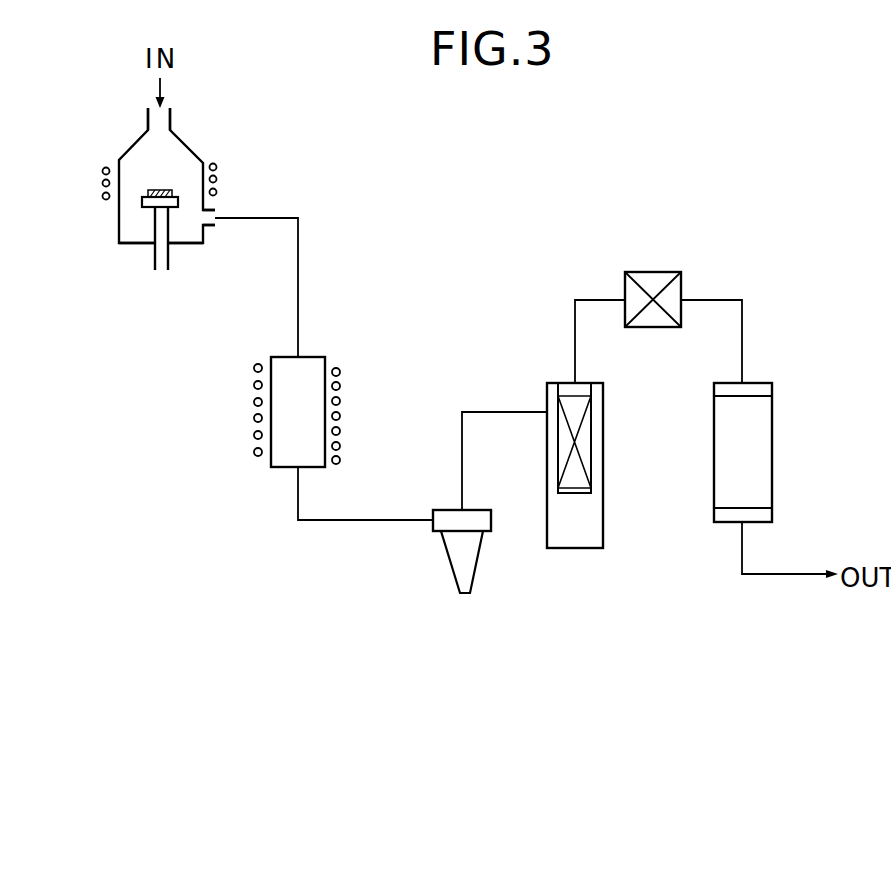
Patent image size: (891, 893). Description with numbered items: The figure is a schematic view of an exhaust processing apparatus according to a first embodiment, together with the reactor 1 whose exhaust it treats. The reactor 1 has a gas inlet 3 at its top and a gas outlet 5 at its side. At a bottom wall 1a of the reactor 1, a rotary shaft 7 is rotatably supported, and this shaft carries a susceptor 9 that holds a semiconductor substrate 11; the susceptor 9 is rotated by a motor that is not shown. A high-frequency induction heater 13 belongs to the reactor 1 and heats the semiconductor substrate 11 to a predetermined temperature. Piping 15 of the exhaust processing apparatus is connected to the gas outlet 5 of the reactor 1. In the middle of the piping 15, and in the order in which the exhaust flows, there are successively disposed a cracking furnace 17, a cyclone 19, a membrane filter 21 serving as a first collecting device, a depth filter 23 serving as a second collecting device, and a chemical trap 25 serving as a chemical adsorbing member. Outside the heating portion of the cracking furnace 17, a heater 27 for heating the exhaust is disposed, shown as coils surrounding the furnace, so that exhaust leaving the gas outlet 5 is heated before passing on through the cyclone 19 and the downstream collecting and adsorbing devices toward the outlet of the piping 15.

The reactor 1 is at (108, 230).
The bottom wall 1a is at (123, 246).
The gas inlet 3 is at (163, 121).
The gas outlet 5 is at (209, 221).
The rotary shaft 7 is at (167, 262).
The susceptor 9 is at (142, 205).
The semiconductor substrate 11 is at (165, 190).
The high-frequency induction heater 13 is at (217, 178).
The piping 15 is at (298, 290).
The cracking furnace 17 is at (268, 470).
The cyclone 19 is at (478, 572).
The membrane filter 21 is at (603, 531).
The depth filter 23 is at (657, 327).
The chemical trap 25 is at (772, 468).
The heater 27 is at (341, 400).